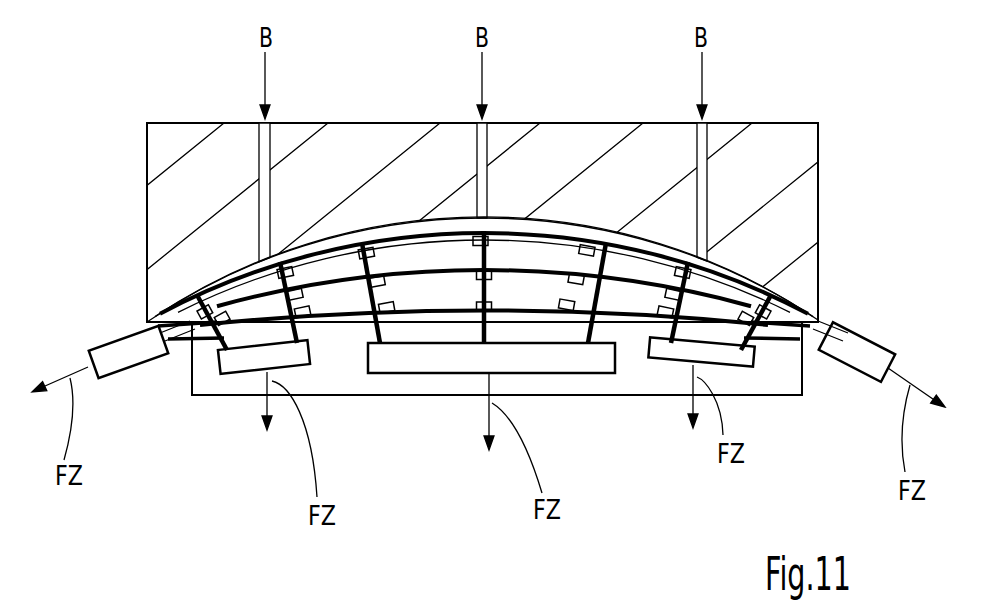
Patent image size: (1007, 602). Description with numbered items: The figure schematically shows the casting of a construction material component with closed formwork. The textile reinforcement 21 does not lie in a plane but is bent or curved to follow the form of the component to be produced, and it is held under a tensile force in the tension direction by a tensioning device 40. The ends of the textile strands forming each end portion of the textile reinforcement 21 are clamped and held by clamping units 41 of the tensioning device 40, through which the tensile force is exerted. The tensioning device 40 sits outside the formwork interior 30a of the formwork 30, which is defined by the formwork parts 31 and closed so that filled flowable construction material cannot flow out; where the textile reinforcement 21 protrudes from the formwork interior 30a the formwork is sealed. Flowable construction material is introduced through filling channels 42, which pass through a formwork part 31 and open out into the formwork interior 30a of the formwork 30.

The textile reinforcement 21 is at (375, 240).
The formwork 30 is at (482, 215).
The formwork interior 30a is at (505, 230).
The formwork part 31 is at (770, 130).
The tensioning device 40 is at (222, 430).
The clamping unit 41 is at (128, 360).
The filling channel 42 is at (255, 167).